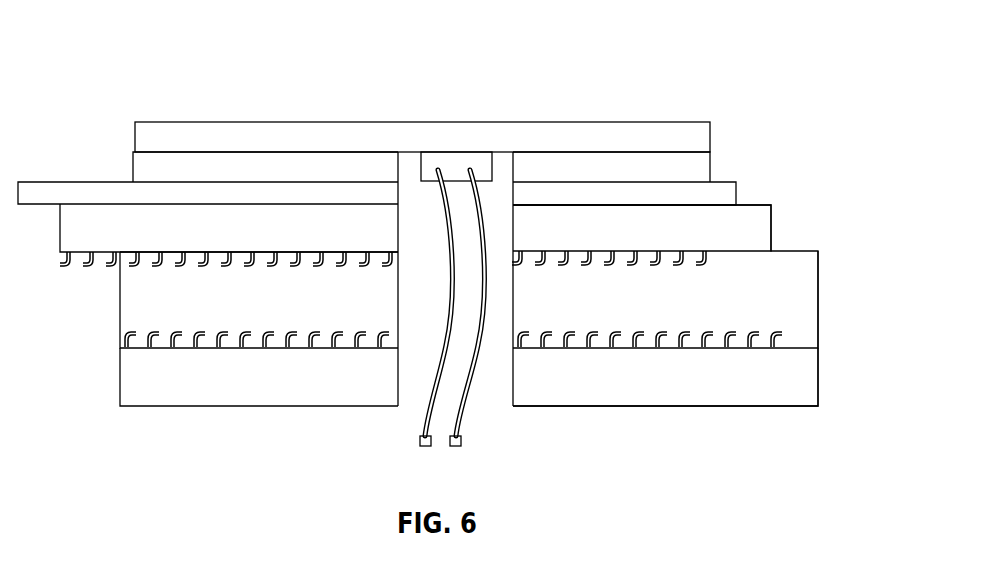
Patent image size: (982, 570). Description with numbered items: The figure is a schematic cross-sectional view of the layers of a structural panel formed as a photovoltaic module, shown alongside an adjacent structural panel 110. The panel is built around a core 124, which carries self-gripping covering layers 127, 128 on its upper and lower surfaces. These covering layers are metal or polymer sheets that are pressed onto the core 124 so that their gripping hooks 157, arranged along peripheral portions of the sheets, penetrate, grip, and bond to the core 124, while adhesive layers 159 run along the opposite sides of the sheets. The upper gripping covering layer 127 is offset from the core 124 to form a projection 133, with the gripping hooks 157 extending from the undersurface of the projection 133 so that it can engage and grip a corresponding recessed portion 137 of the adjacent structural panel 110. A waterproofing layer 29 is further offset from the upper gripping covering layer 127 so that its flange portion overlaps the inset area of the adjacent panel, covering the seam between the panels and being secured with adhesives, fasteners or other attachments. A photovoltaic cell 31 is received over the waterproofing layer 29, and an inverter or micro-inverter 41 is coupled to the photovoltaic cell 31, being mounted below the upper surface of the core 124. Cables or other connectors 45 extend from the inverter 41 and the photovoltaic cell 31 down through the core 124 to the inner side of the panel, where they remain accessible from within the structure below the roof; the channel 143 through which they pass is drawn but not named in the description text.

The structural panel 110 is at (170, 58).
The photovoltaic cell 31 is at (518, 132).
The inverter 41 is at (450, 165).
The adhesive layer 159 is at (650, 168).
The waterproofing layer 29 is at (733, 192).
The projection 133 is at (45, 217).
The recessed portion 137 is at (835, 250).
The upper self-gripping covering layer 127 is at (760, 233).
The core 124 is at (800, 300).
The lower self-gripping covering layer 128 is at (800, 385).
The gripping hooks 157 is at (341, 268).
The cables 45 is at (432, 424).
The channel 143 is at (512, 384).